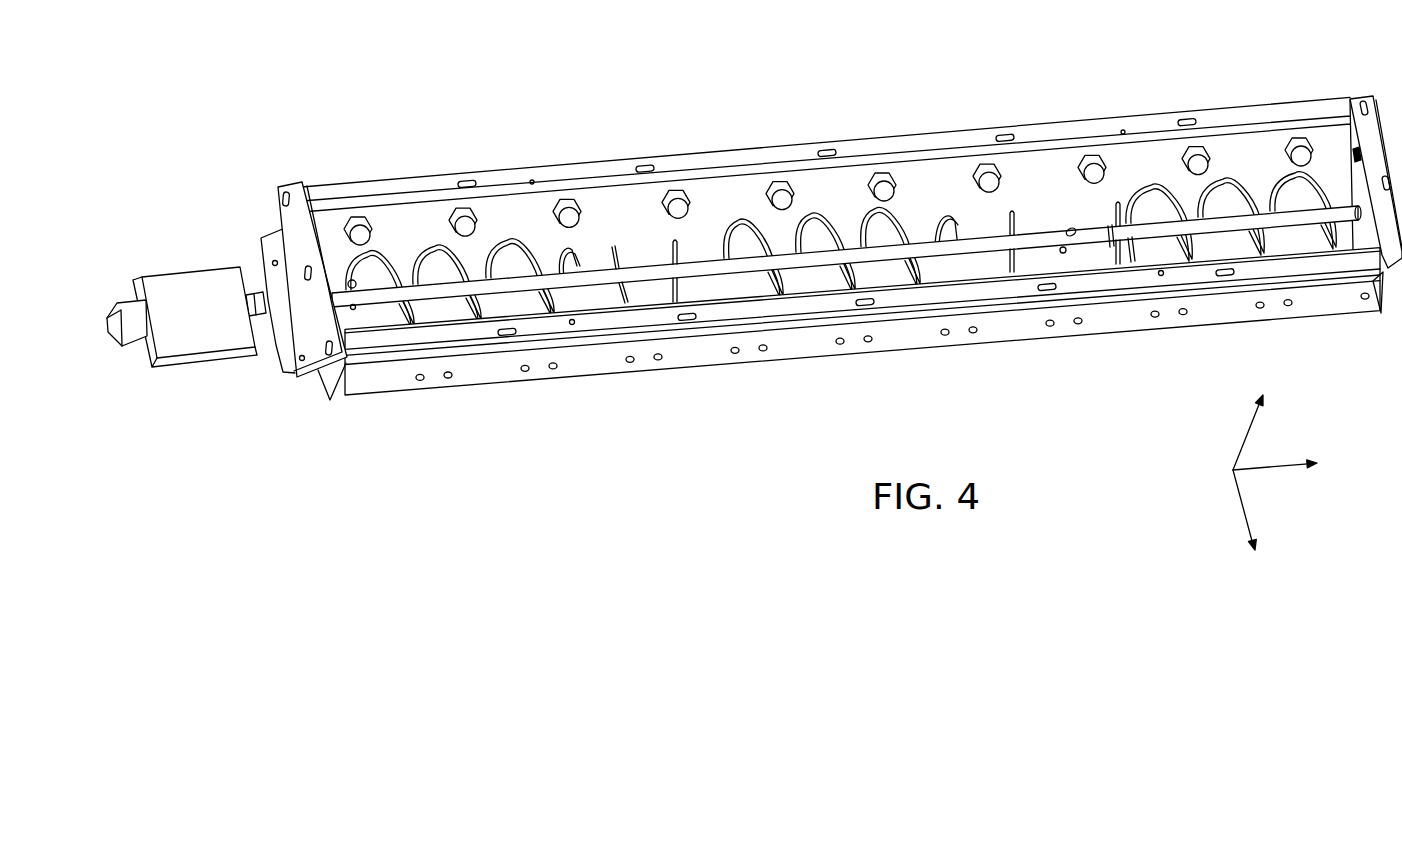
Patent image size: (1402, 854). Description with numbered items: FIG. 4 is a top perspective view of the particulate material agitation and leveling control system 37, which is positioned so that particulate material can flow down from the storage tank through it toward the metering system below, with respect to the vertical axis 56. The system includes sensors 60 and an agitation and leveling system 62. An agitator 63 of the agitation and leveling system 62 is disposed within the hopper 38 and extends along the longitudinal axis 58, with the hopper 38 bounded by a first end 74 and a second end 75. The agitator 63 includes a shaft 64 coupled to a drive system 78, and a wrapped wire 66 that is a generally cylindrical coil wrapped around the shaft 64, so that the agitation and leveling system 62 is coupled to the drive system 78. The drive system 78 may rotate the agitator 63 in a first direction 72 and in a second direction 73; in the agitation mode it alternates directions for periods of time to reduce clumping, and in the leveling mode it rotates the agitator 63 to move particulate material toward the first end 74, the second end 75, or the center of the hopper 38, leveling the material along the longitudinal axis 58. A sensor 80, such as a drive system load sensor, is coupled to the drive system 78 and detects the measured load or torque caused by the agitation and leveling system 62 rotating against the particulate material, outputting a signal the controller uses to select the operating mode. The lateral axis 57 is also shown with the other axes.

The particulate material agitation and leveling control system 37 is at (831, 76).
The hopper 38 is at (1250, 105).
The vertical axis 56 is at (1243, 437).
The lateral direction arrow 57 is at (1243, 502).
The longitudinal axis 58 is at (1272, 463).
The sensors 60 is at (452, 217).
The agitation and leveling system 62 is at (1288, 352).
The agitator 63 is at (1070, 260).
The shaft 64 is at (980, 248).
The wrapped wire 66 is at (767, 297).
The first direction 72 is at (277, 322).
The second direction 73 is at (262, 314).
The first end 74 is at (1337, 72).
The second end 75 is at (308, 157).
The drive system 78 is at (190, 270).
The sensor 80 is at (128, 338).